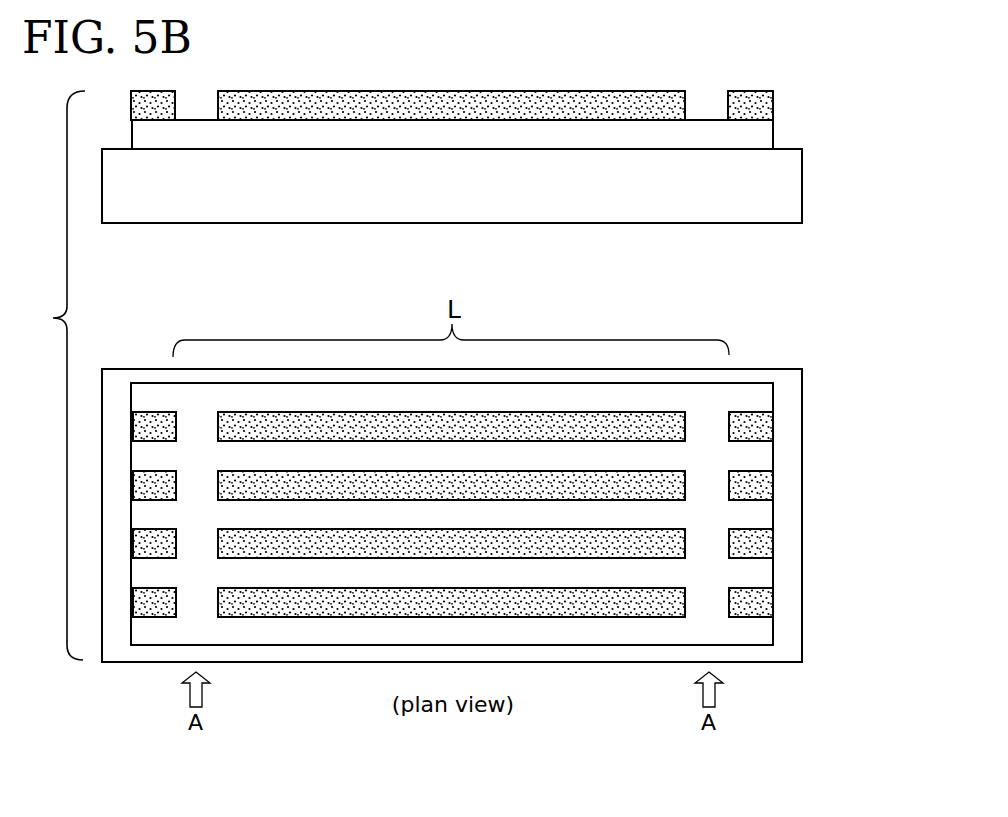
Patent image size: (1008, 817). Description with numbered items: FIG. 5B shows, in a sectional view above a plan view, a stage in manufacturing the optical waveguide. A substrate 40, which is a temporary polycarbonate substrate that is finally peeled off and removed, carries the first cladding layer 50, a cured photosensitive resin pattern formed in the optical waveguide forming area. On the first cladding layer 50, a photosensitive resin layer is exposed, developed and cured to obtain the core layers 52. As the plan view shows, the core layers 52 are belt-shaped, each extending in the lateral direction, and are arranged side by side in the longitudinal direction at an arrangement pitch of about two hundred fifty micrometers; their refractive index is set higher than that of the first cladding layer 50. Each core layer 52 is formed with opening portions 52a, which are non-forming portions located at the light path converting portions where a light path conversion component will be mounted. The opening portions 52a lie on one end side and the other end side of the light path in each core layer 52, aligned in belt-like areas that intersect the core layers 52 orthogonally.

The substrate 40 is at (788, 185).
The first cladding layer 50 is at (765, 133).
The core layer 52 is at (447, 98).
The opening portion 52a is at (687, 102).